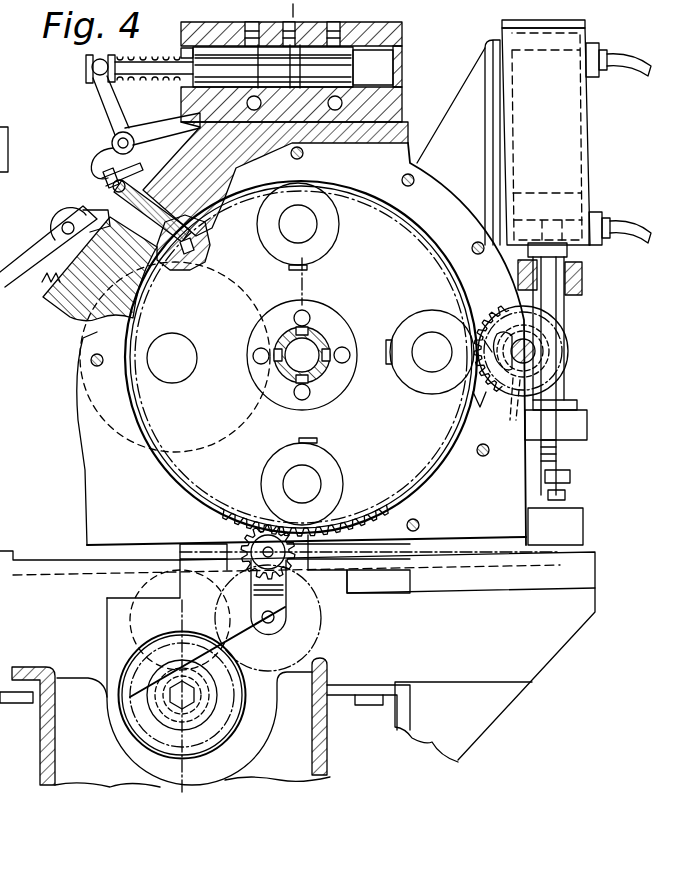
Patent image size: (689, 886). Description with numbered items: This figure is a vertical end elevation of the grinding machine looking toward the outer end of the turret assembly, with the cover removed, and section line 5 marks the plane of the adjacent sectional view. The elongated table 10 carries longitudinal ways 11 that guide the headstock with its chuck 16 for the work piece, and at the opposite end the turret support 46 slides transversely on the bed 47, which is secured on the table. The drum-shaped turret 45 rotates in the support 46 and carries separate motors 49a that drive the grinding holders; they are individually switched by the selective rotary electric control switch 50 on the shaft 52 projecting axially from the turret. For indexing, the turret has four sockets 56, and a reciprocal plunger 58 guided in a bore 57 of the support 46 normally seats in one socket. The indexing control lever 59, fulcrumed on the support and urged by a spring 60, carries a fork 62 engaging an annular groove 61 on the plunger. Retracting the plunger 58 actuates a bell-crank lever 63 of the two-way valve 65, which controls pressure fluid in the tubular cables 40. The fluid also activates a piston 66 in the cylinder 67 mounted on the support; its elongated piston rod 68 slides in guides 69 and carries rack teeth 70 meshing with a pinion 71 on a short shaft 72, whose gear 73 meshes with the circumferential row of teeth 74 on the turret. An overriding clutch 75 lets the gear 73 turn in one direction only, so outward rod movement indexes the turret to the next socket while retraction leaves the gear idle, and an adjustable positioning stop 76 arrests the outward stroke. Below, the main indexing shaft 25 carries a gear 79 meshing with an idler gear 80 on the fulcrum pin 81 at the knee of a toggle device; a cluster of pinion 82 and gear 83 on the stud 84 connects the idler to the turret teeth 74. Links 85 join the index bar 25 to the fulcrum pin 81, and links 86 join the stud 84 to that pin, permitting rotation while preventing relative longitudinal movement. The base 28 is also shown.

The section line 5- 5 is at (275, 10).
The table 10 is at (42, 760).
The longitudinal ways 11 is at (25, 687).
The chuck 16 is at (80, 372).
The main indexing shaft 25 is at (188, 705).
The base 28 is at (137, 588).
The tubular cables 40 is at (258, 108).
The turret 45 is at (413, 470).
The turret support 46 is at (407, 128).
The bed 47 is at (50, 566).
The motors 49a is at (328, 248).
The electric control switch 50 is at (8, 125).
The shaft 52 is at (333, 377).
The sockets 56 is at (196, 247).
The bore 57 is at (172, 268).
The reciprocal plunger 58 is at (203, 233).
The indexing control lever 59 is at (52, 254).
The spring 60 is at (62, 317).
The annular groove 61 is at (133, 143).
The fork 62 is at (122, 173).
The bell-crank lever 63 is at (115, 108).
The two-way valve 65 is at (386, 22).
The piston 66 is at (568, 195).
The cylinder 67 is at (587, 125).
The piston rod 68 is at (567, 393).
The guides 69 is at (583, 275).
The rack teeth 70 is at (570, 476).
The pinion 71 is at (511, 412).
The short shaft 72 is at (535, 350).
The gear 73 is at (487, 320).
The circumferential row of teeth 74 is at (480, 407).
The overriding clutch 75 is at (489, 346).
The adjustable positioning stop 76 is at (566, 496).
The gear 79 is at (247, 708).
The idler gear 80 is at (240, 577).
The fulcrum pin 81 is at (275, 617).
The pinion 82 is at (300, 551).
The gear 83 is at (255, 517).
The stud 84 is at (240, 552).
The links 85 is at (265, 645).
The links 86 is at (287, 587).